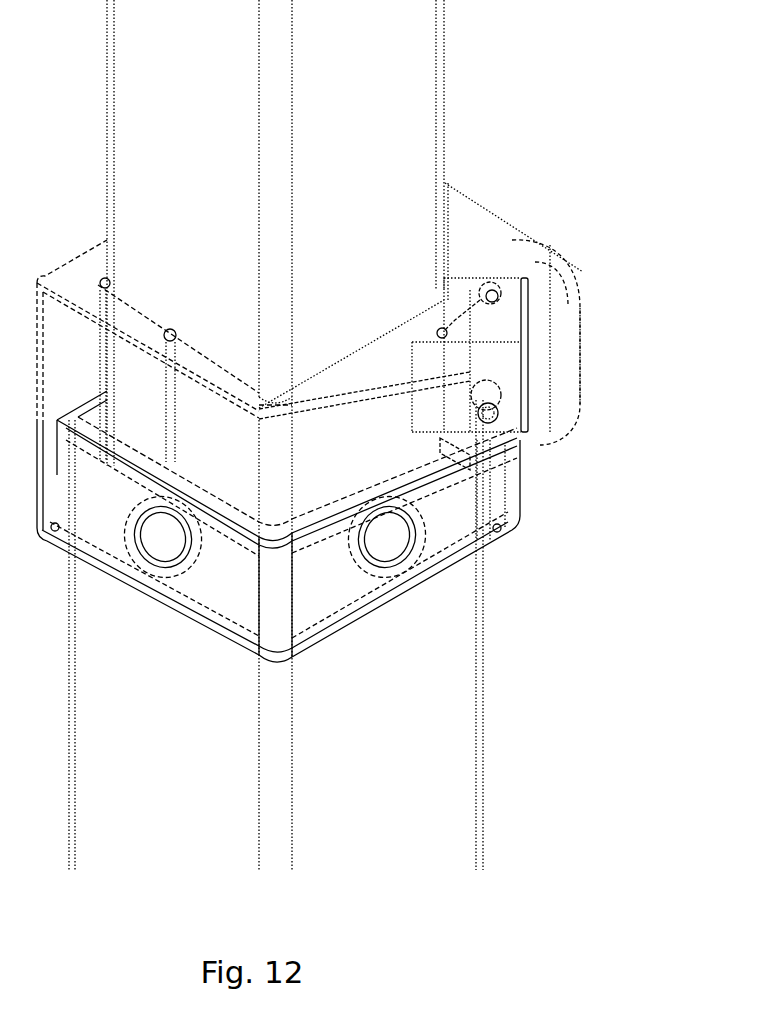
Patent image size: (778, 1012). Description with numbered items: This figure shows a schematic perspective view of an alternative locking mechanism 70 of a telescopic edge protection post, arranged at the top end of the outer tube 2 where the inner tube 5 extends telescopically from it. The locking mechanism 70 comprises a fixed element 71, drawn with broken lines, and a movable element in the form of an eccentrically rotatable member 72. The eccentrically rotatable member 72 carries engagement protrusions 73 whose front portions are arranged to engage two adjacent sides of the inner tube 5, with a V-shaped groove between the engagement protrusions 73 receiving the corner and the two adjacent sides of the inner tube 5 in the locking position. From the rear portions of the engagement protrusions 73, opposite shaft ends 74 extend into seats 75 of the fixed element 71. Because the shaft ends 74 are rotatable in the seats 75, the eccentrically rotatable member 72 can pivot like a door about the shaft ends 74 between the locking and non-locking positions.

The outer tube 2 is at (489, 714).
The inner tube 5 is at (450, 52).
The locking mechanism 70 is at (590, 327).
The fixed element 71 is at (487, 207).
The eccentrically rotatable member 72 is at (536, 373).
The engagement protrusions 73 is at (486, 298).
The shaft ends 74 is at (500, 400).
The seats 75 is at (455, 447).